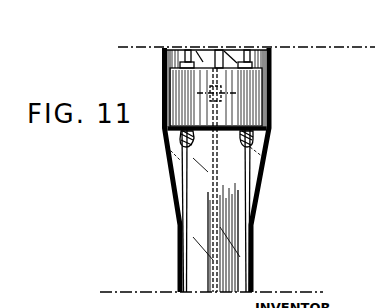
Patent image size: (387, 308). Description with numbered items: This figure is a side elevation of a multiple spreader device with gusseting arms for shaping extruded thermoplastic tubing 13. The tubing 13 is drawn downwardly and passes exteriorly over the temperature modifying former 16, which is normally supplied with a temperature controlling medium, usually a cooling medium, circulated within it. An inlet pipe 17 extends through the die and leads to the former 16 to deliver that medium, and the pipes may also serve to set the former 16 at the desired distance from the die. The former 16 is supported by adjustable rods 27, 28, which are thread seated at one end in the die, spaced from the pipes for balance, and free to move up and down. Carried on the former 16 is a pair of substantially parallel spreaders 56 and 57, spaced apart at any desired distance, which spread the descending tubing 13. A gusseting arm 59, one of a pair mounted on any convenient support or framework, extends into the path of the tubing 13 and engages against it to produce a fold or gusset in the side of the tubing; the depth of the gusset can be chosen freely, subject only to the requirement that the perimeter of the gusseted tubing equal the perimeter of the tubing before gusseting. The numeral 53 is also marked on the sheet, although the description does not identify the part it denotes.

The thermoplastic tubing 13 is at (267, 145).
The temperature modifying former 16 is at (257, 102).
The inlet pipe 17 is at (218, 50).
The adjustable rod 27 is at (186, 50).
The adjustable rod 28 is at (250, 50).
The base line 53 is at (164, 298).
The spreader 56 is at (185, 176).
The spreader 57 is at (248, 173).
The gusseting arm 59 is at (217, 212).